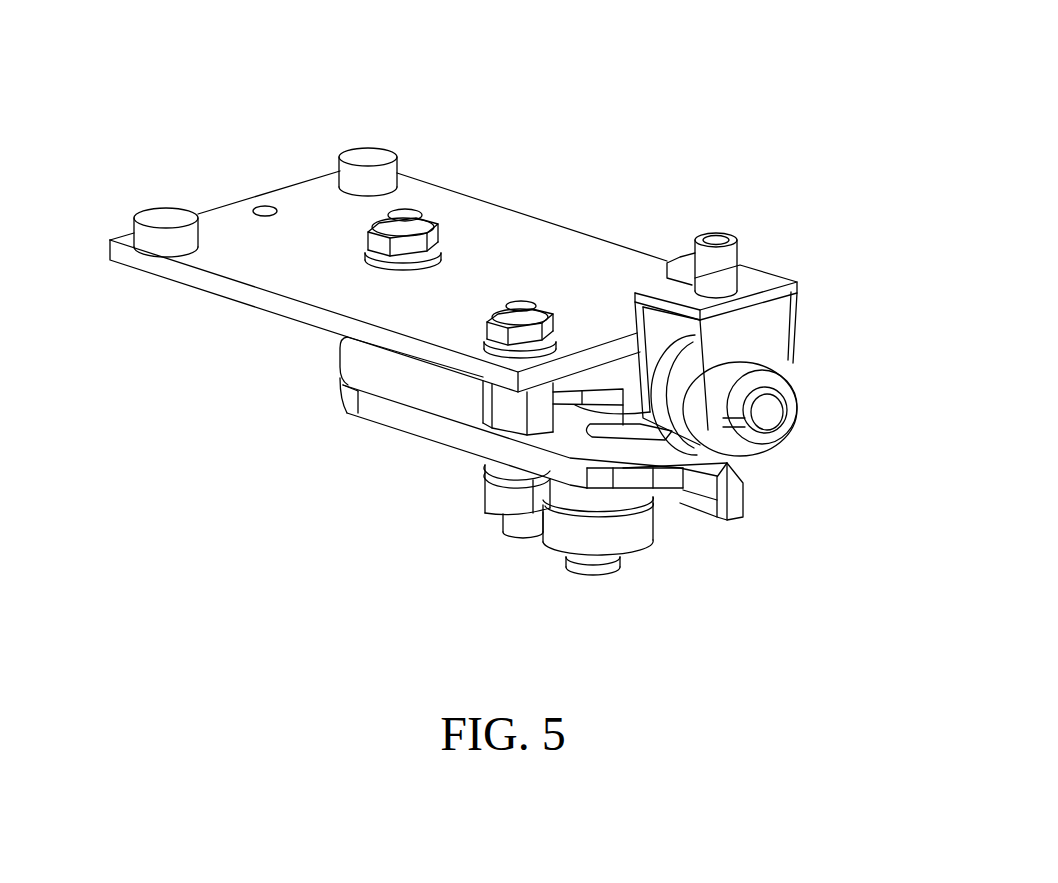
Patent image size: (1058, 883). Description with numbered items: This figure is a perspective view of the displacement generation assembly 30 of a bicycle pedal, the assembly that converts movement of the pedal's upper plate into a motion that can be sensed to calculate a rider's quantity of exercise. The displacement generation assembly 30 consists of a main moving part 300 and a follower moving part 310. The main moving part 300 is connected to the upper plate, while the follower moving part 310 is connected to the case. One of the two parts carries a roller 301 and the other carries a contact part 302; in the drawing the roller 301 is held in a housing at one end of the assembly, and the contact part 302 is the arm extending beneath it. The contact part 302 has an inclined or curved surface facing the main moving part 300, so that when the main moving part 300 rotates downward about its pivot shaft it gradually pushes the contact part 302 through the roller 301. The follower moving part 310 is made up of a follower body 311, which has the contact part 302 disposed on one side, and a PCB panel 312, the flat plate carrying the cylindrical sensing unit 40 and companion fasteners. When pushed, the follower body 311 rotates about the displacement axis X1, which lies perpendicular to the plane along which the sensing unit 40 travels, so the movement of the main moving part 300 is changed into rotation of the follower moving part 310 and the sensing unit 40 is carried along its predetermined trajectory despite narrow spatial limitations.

The displacement generation assembly 30 is at (72, 37).
The sensing unit 40 is at (368, 152).
The main moving part 300 is at (656, 438).
The roller 301 is at (683, 360).
The contact part 302 is at (718, 520).
The follower moving part 310 is at (388, 529).
The follower body 311 is at (395, 415).
The PCB panel 312 is at (283, 312).
The displacement axis X1 is at (595, 575).